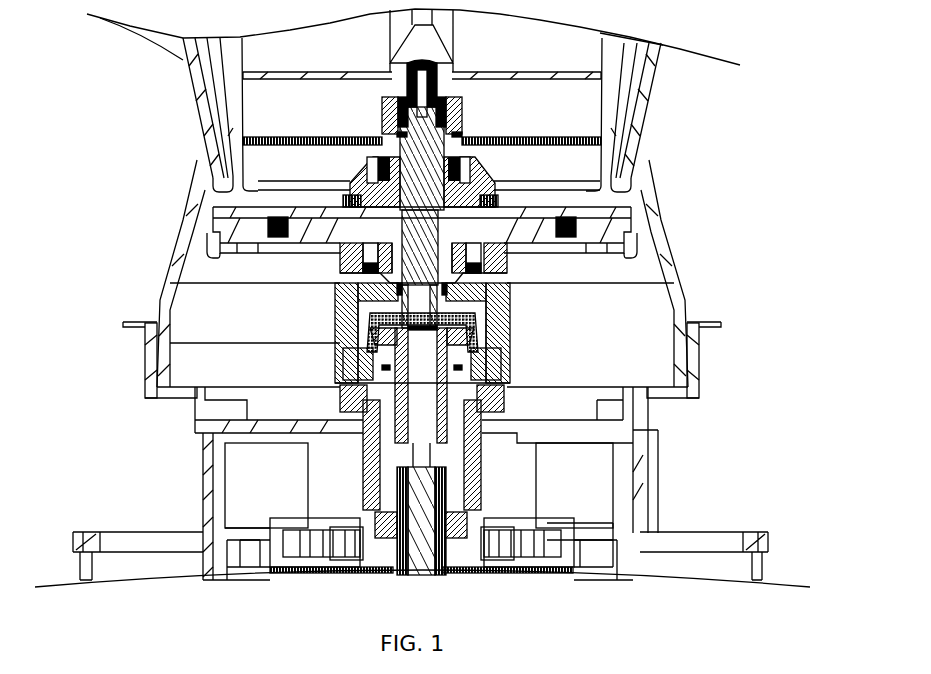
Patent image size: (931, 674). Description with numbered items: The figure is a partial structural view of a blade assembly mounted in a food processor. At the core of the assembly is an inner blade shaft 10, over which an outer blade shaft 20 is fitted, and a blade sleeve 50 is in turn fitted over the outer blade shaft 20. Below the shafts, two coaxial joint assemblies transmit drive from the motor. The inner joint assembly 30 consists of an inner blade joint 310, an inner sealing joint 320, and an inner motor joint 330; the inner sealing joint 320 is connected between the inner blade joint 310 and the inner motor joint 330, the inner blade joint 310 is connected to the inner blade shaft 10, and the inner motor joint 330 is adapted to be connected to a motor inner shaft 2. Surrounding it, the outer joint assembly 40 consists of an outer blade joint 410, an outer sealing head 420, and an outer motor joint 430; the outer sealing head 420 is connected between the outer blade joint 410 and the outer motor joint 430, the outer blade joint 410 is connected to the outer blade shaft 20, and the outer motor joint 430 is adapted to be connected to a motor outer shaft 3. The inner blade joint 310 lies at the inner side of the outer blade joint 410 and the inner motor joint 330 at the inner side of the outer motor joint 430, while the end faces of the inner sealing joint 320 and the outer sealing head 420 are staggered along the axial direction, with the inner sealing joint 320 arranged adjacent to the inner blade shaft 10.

The blade sleeve 50 is at (470, 163).
The inner blade shaft 10 is at (420, 163).
The outer blade shaft 20 is at (500, 212).
The inner joint assembly 30 is at (567, 429).
The inner blade joint 310 is at (505, 308).
The inner sealing joint 320 is at (510, 334).
The inner motor joint 330 is at (512, 366).
The outer joint assembly 40 is at (190, 377).
The outer blade joint 410 is at (342, 310).
The outer sealing head 420 is at (365, 362).
The outer motor joint 430 is at (360, 472).
The motor outer shaft 3 is at (300, 518).
The motor inner shaft 2 is at (445, 507).